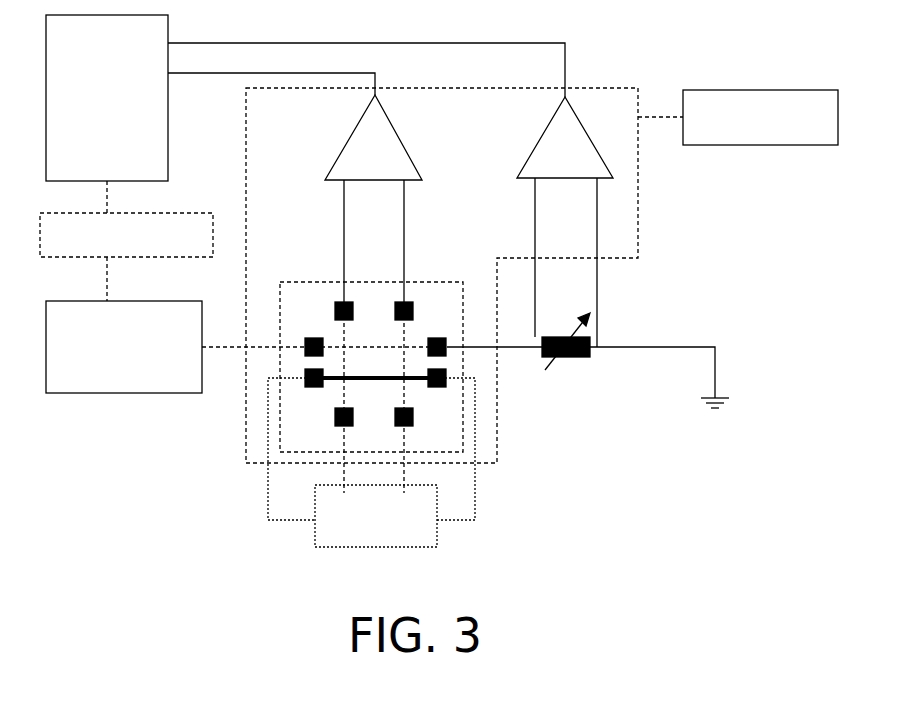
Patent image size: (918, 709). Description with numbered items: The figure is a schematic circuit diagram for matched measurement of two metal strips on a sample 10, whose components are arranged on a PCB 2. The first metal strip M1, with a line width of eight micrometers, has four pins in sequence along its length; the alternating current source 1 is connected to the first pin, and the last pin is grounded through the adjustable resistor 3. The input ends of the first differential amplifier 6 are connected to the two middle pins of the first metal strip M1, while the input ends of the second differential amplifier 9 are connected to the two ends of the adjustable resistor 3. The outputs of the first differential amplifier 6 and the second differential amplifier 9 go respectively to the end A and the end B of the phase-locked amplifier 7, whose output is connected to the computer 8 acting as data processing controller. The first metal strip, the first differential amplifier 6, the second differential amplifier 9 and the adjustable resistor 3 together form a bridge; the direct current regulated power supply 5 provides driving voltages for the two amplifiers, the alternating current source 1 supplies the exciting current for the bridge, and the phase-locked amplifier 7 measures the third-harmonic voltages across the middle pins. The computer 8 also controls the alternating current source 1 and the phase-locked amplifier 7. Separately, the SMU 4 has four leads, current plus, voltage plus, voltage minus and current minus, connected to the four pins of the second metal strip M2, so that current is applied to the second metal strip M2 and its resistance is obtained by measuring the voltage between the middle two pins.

The alternating current source 1 is at (65, 350).
The PCB 2 is at (246, 443).
The adjustable resistor 3 is at (563, 358).
The SMU 4 is at (437, 535).
The direct current regulated power supply 5 is at (727, 87).
The first differential amplifier 6 is at (375, 150).
The phase-locked amplifier 7 is at (65, 98).
The computer 8 is at (65, 235).
The second differential amplifier 9 is at (565, 152).
The sample 10 is at (416, 362).
The first metal strip M1 is at (387, 342).
The second metal strip M2 is at (393, 380).